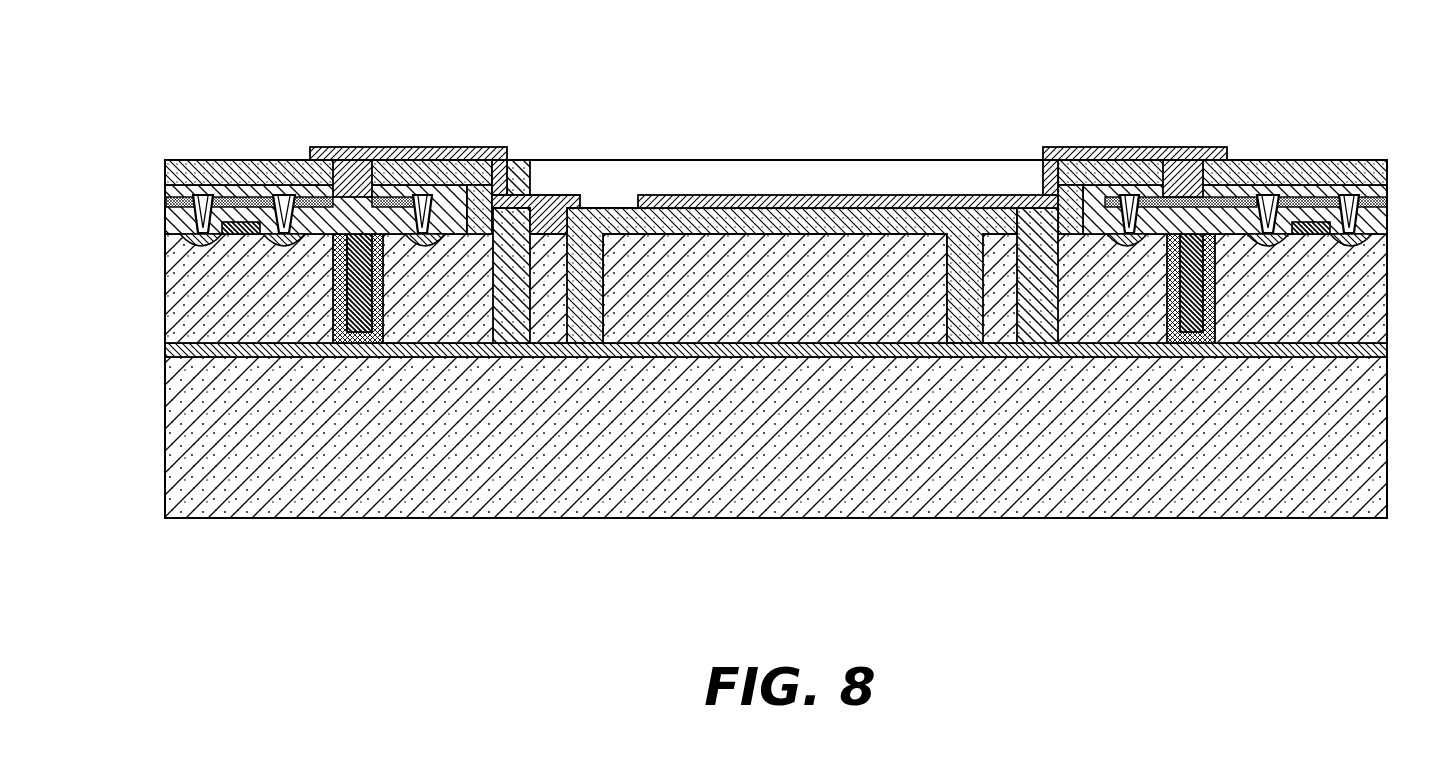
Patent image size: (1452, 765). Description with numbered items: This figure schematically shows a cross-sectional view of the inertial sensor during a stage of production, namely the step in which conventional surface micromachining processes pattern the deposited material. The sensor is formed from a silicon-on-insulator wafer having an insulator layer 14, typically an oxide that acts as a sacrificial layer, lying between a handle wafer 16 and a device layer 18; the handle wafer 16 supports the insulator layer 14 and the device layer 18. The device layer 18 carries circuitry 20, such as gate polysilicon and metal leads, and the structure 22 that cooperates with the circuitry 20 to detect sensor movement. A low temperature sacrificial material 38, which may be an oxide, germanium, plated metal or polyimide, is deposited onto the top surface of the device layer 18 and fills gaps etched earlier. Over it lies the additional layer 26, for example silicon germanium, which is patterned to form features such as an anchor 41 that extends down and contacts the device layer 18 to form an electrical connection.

The insulator layer 14 is at (166, 352).
The handle wafer 16 is at (172, 428).
The device layer 18 is at (172, 283).
The circuitry 20 is at (158, 210).
The movable structure 22 is at (786, 265).
The additional layer 26 is at (457, 147).
The sacrificial material 38 is at (250, 160).
The anchor 41 is at (352, 178).